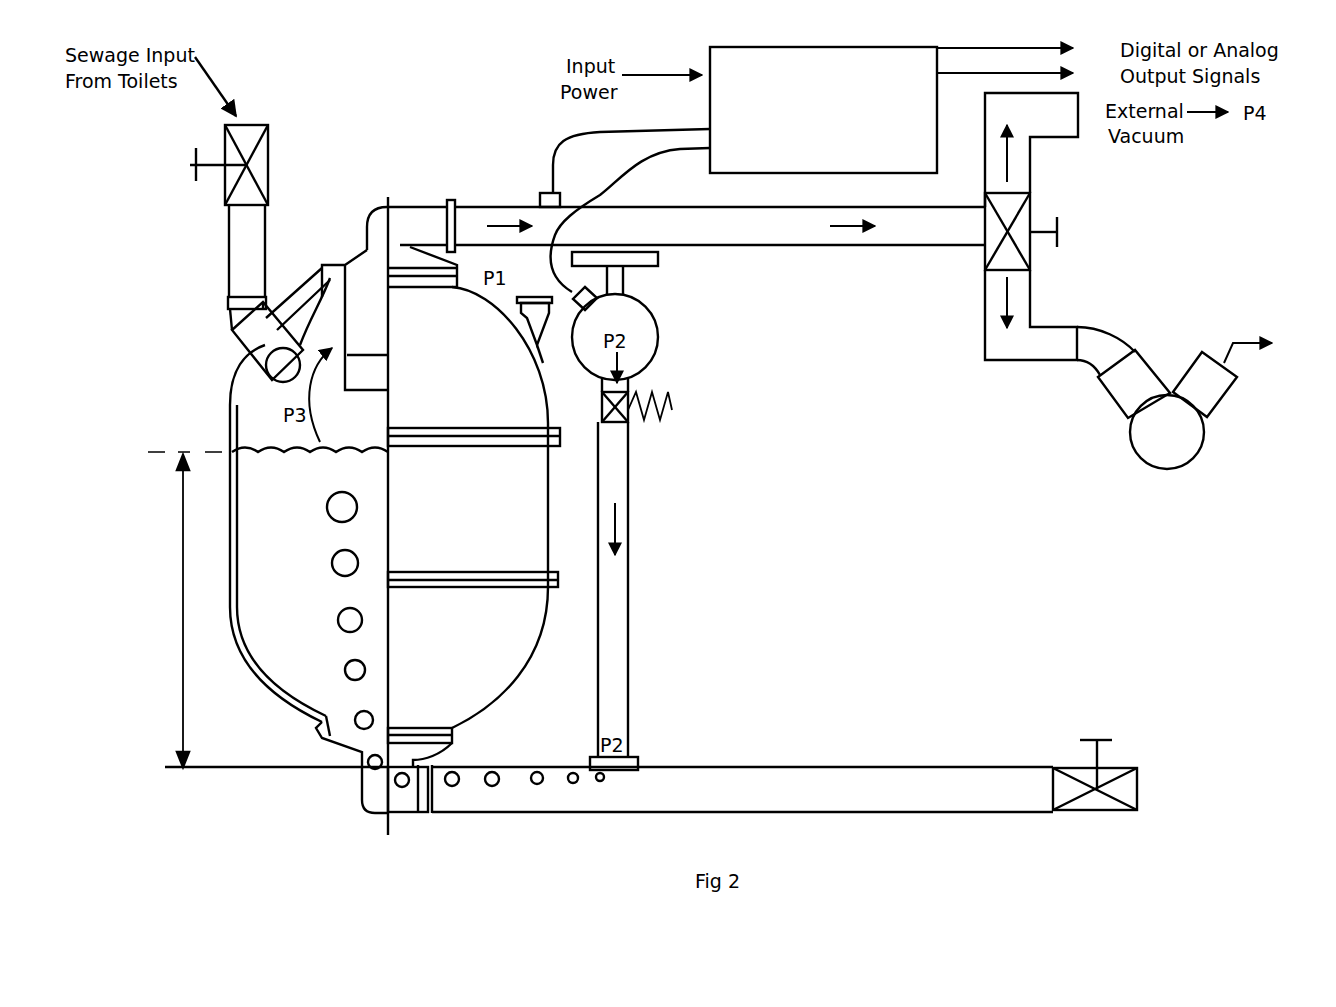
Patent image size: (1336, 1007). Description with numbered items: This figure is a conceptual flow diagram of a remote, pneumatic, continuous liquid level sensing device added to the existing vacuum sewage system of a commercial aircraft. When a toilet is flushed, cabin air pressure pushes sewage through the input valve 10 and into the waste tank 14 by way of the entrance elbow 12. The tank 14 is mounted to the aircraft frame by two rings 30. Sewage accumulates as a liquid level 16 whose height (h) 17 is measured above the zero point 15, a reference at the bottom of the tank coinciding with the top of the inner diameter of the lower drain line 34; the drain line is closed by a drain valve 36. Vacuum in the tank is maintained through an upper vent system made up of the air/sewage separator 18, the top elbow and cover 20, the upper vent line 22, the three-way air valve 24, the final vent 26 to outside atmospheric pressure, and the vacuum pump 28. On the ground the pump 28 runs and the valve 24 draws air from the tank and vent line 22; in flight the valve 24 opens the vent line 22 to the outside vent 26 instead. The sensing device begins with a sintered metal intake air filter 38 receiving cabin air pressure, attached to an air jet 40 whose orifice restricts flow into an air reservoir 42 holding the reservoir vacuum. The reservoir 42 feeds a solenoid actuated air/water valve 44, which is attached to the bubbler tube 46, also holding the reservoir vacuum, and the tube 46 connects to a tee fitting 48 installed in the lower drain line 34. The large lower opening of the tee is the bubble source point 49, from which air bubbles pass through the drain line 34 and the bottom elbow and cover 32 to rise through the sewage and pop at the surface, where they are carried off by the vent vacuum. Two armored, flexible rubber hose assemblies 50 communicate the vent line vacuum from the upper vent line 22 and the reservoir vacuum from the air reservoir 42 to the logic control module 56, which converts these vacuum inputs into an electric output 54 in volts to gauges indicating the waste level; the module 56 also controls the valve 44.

The input valve 10 is at (209, 206).
The entrance elbow 12 is at (391, 325).
The waste tank 14 is at (301, 293).
The zero point 15 is at (276, 803).
The liquid level 16 is at (268, 482).
The height (h) 17 is at (184, 611).
The air/sewage separator 18 is at (366, 329).
The top elbow and cover 20 is at (411, 226).
The upper vent line 22 is at (720, 226).
The 3-way air valve 24 is at (1036, 237).
The final vent 26 is at (1031, 150).
The vacuum pump 28 is at (1128, 395).
The rings 30 is at (487, 511).
The bottom elbow and cover 32 is at (410, 789).
The lower drain line 34 is at (742, 789).
The drain line valve 36 is at (1095, 790).
The intake air filter 38 is at (720, 271).
The air jet 40 is at (699, 306).
The air reservoir 42 is at (615, 329).
The solenoid actuated air/water valve 44 is at (749, 427).
The bubbler tube 46 is at (735, 589).
The tee fitting 48 is at (664, 743).
The bubble source point 49 is at (778, 806).
The armored flexible rubber hose assembly 50 is at (625, 210).
The electric output 54 is at (1019, 62).
The logic control module (LCM) assembly 56 is at (823, 110).